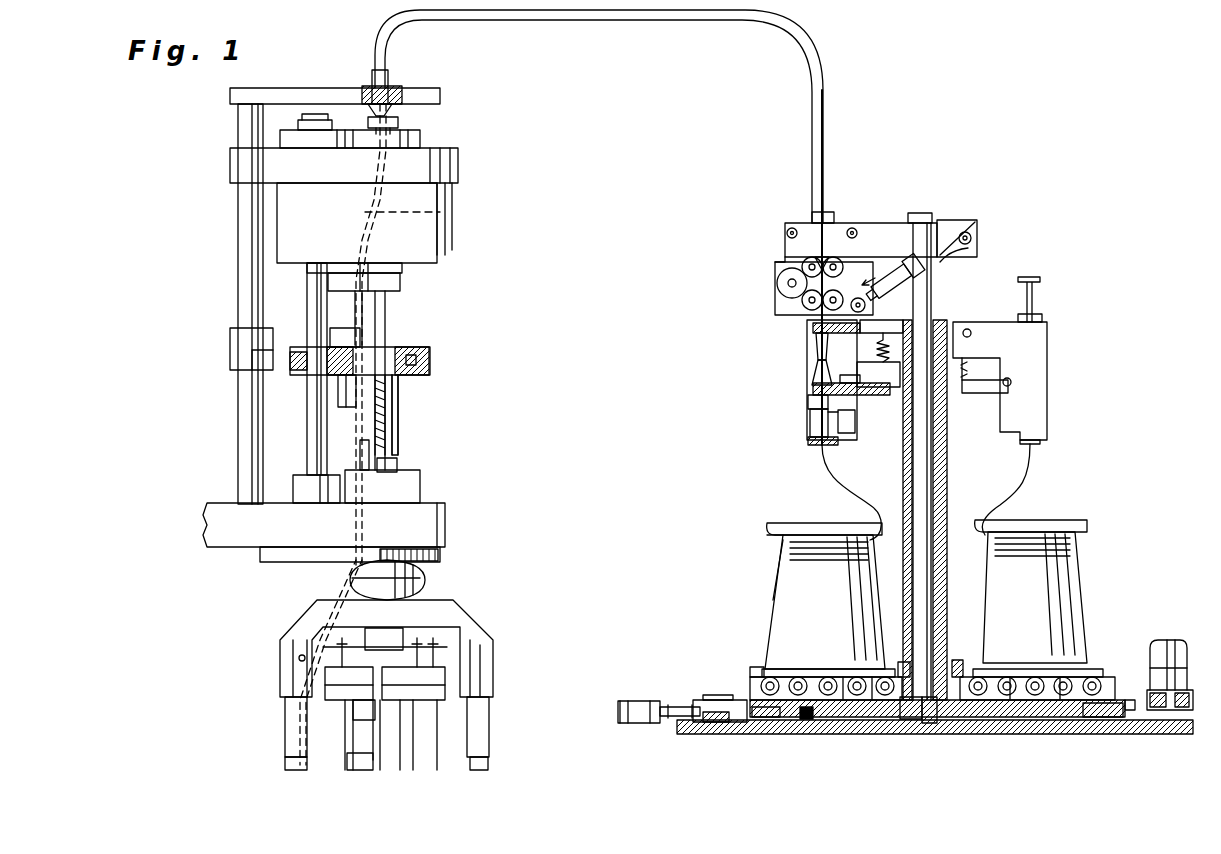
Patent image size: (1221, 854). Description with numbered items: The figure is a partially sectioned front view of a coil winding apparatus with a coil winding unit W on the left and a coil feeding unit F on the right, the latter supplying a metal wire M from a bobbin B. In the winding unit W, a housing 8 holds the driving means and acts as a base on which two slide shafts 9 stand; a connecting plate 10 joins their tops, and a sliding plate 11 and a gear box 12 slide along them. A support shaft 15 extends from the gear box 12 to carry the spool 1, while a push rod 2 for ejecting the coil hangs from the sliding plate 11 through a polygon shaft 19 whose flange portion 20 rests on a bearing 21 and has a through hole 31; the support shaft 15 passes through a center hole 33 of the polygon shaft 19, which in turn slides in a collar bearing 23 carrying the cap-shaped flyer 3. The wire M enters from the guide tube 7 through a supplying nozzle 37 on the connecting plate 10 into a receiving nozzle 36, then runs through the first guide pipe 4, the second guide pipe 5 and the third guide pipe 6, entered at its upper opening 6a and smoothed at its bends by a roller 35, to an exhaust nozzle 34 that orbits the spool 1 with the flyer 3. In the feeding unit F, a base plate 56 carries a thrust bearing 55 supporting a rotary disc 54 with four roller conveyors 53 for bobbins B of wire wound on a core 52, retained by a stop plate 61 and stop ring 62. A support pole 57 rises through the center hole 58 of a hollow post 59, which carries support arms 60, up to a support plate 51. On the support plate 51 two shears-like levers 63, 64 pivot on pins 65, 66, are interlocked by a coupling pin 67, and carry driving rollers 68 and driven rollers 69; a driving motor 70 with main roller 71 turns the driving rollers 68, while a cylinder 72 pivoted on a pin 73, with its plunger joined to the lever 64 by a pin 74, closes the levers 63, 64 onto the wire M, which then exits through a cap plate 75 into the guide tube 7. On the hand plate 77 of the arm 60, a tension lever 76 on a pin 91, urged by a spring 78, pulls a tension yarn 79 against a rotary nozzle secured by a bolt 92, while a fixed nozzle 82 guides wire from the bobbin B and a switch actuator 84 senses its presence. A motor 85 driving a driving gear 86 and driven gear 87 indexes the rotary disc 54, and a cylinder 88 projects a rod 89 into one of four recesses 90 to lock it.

The coil winding unit W is at (201, 141).
The coil feeding unit F is at (1015, 157).
The wire M is at (822, 470).
The bobbin B is at (767, 530).
The spool 1 is at (348, 764).
The push rod 2 is at (348, 745).
The flyer 3 is at (290, 638).
The first guide pipe 4 is at (440, 212).
The second guide pipe 5 is at (395, 295).
The third guide pipe 6 is at (290, 676).
The upper opening 6a is at (360, 450).
The guide tube 7 is at (824, 75).
The housing 8 is at (210, 520).
The slide shafts 9 is at (245, 252).
The connecting plate 10 is at (425, 94).
The sliding plate 11 is at (240, 342).
The gear box 12 is at (455, 160).
The support shaft 15 is at (390, 314).
The polygon shaft 19 is at (398, 436).
The flange portion 20 is at (410, 347).
The bearing 21 is at (345, 382).
The collar bearing 23 is at (420, 580).
The through hole 31 is at (400, 382).
The center hole 33 is at (398, 418).
The exhaust nozzle 34 is at (288, 765).
The roller 35 is at (352, 578).
The receiving nozzle 36 is at (398, 120).
The supplying nozzle 37 is at (392, 90).
The support plate 51 is at (950, 227).
The core 52 is at (775, 540).
The roller conveyor 53 is at (778, 620).
The rotary disc 54 is at (795, 712).
The thrust bearing 55 is at (1050, 708).
The base plate 56 is at (975, 732).
The support pole 57 is at (935, 484).
The center hole 58 is at (905, 720).
The hollow post 59 is at (940, 440).
The support arm 60 is at (1050, 330).
The stop plate 61 is at (755, 668).
The stop ring 62 is at (930, 725).
The lever 63 is at (778, 305).
The lever 64 is at (880, 225).
The pin 65 is at (790, 228).
The pin 66 is at (838, 258).
The coupling pin 67 is at (850, 228).
The driving rollers 68 is at (805, 258).
The driven rollers 69 is at (840, 292).
The driving motor 70 is at (782, 272).
The main roller 71 is at (803, 292).
The cylinder 72 is at (972, 242).
The pin 73 is at (968, 248).
The cylinder 74 is at (908, 300).
The cap plate 75 is at (818, 212).
The tension lever 76 is at (816, 425).
The hand plate 77 is at (818, 375).
The spring 78 is at (885, 390).
The tension yarn 79 is at (818, 350).
The fixed nozzle 82 is at (816, 445).
The actuator 84 is at (848, 435).
The motor 85 is at (1165, 648).
The driving gear 86 is at (1130, 712).
The driven gear 87 is at (1095, 718).
The cylinder 88 is at (642, 726).
The rod 89 is at (712, 710).
The recesses 90 is at (735, 722).
The pin 91 is at (815, 405).
The bolt 92 is at (860, 397).